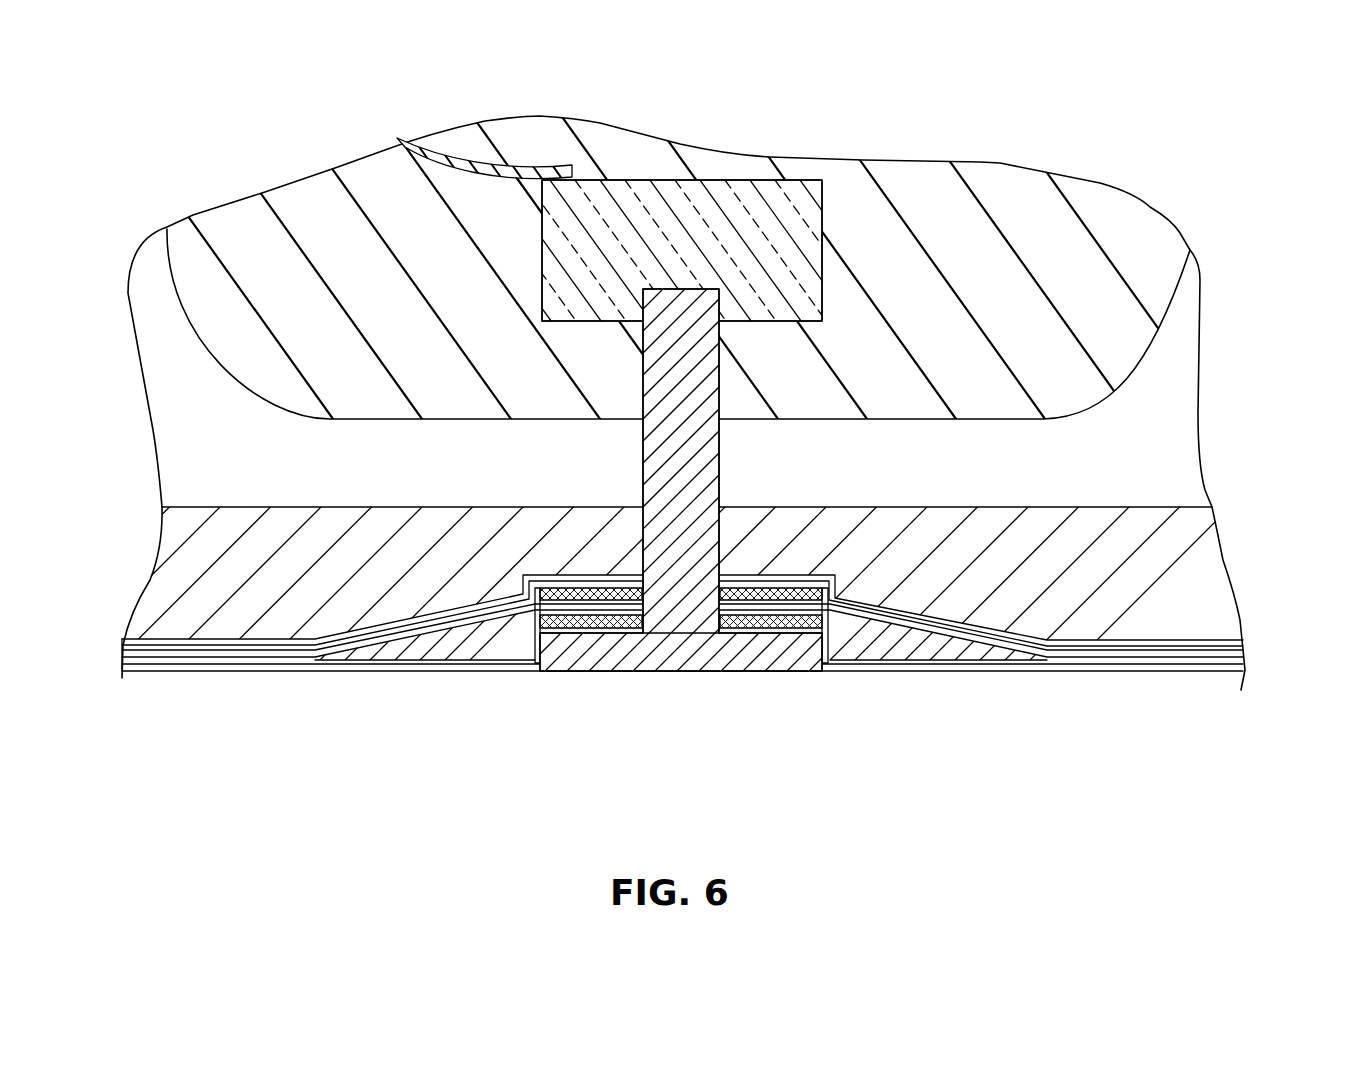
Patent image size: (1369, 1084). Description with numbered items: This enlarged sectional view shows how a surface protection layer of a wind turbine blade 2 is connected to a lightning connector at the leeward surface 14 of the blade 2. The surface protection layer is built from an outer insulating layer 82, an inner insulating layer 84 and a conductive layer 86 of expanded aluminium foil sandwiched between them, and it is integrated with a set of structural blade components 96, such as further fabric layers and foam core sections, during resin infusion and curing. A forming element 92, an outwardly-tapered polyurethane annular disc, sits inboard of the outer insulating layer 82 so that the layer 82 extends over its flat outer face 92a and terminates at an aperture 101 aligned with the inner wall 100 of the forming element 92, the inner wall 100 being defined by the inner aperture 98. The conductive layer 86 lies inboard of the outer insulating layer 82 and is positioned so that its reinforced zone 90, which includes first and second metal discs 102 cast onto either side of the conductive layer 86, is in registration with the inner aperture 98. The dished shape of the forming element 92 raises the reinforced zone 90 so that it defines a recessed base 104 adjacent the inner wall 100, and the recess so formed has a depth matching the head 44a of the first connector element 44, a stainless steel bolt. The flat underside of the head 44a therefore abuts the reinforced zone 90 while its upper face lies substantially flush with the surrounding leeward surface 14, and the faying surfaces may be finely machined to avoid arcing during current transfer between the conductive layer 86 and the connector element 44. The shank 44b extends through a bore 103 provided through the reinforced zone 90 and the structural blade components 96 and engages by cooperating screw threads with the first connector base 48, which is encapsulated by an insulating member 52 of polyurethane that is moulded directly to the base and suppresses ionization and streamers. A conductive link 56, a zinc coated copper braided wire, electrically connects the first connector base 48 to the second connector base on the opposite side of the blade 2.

The wind turbine blade 2 is at (677, 436).
The leeward surface 14 is at (649, 528).
The first connector element 44 is at (725, 528).
The head 44a is at (607, 660).
The shank 44b is at (719, 451).
The first connector base 48 is at (822, 203).
The insulating member 52 is at (1118, 197).
The conductive link 56 is at (463, 157).
The outer insulating layer 82 is at (203, 668).
The inner insulating layer 84 is at (139, 638).
The conductive layer 86 is at (122, 655).
The reinforced zone 90 is at (714, 589).
The forming element 92 is at (468, 650).
The flat outer face 92a is at (398, 658).
The structural blade components 96 is at (1228, 585).
The inner aperture 98 is at (817, 665).
The inner wall 100 is at (541, 645).
The aperture 101 is at (538, 648).
The first and second metal discs 102 is at (613, 595).
The bore 103 is at (713, 593).
The recessed base 104 is at (740, 630).